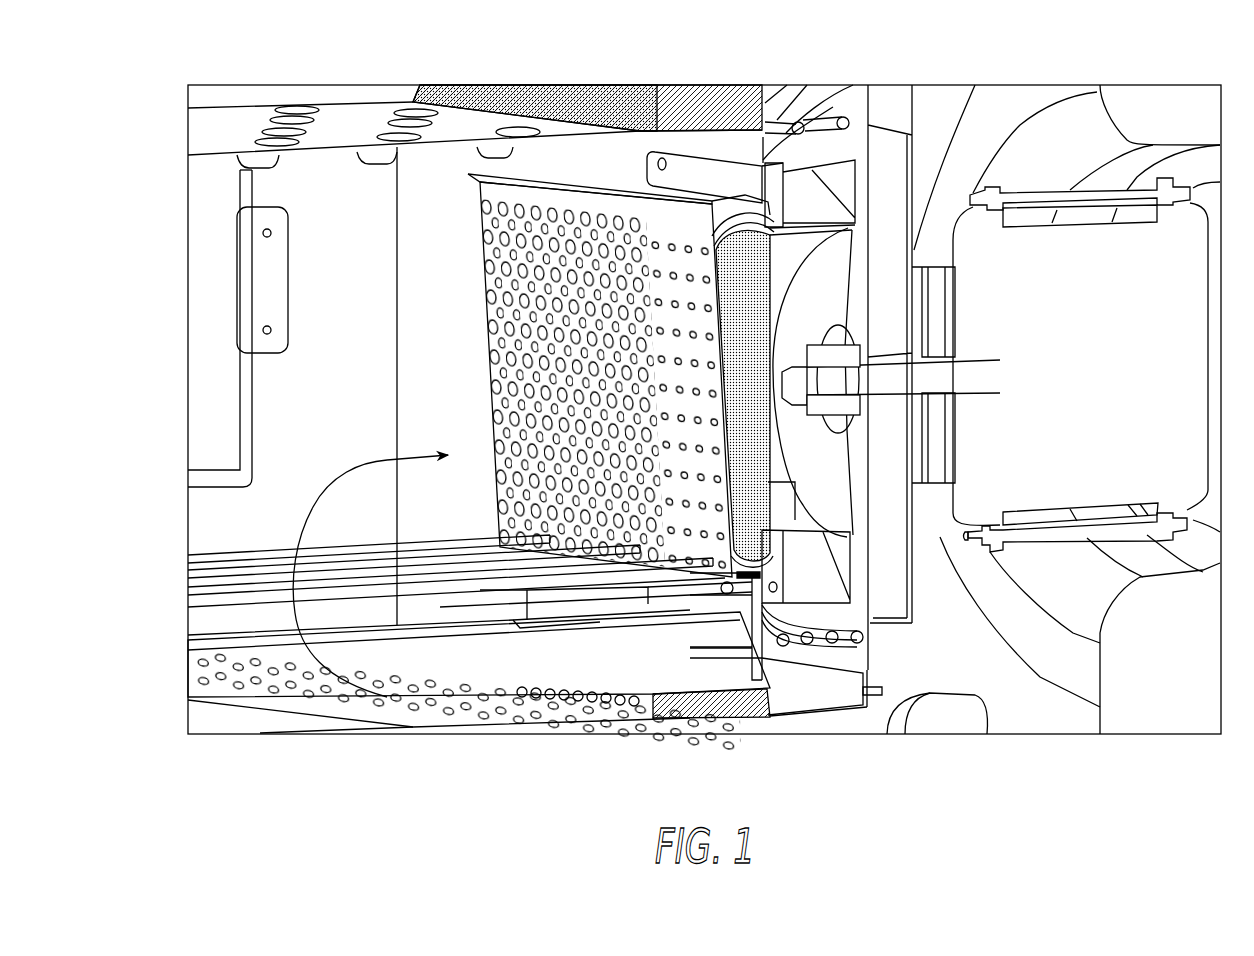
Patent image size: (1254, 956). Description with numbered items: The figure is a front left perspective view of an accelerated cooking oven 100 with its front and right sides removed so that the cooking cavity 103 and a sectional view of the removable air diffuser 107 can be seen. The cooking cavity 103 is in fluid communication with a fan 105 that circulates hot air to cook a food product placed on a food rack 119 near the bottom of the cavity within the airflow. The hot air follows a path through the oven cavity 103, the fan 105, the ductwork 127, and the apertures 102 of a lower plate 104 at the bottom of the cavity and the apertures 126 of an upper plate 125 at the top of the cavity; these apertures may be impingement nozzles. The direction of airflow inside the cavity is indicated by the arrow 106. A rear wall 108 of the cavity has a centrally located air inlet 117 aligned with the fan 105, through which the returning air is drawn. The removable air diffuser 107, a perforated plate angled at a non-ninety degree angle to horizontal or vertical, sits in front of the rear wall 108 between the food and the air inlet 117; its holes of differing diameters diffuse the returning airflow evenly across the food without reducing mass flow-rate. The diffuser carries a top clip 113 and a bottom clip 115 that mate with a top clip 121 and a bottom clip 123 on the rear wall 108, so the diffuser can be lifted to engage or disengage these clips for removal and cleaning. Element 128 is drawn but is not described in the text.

The accelerated cooking oven 100 is at (153, 168).
The apertures 102 is at (243, 690).
The cooking cavity 103 is at (226, 517).
The lower plate 104 is at (323, 690).
The fan 105 is at (888, 290).
The arrow 106 is at (333, 470).
The removable air diffuser 107 is at (482, 376).
The rear wall 108 is at (703, 143).
The top clip 113 is at (627, 186).
The bottom clip 115 is at (753, 600).
The air inlet 117 is at (767, 443).
The food rack 119 is at (206, 648).
The top clip 121 is at (736, 172).
The bottom clip 123 is at (708, 613).
The upper plate 125 is at (242, 117).
The apertures 126 is at (300, 105).
The ductwork 127 is at (843, 608).
The pipes 128 is at (832, 645).